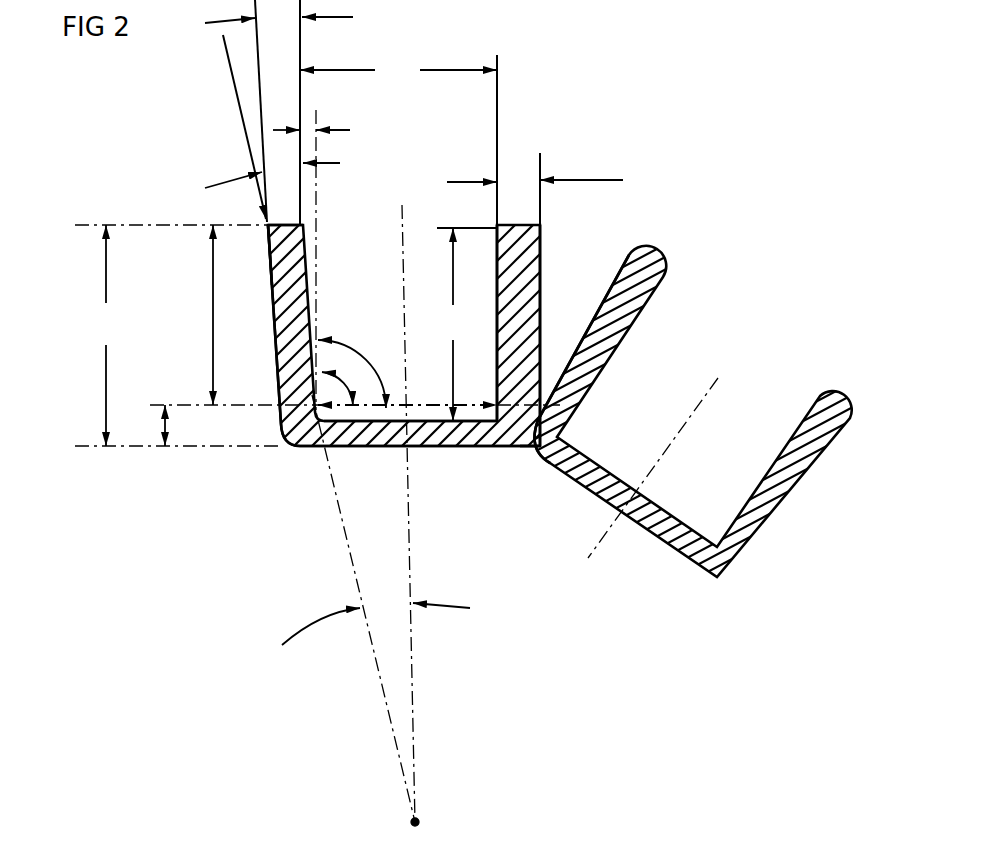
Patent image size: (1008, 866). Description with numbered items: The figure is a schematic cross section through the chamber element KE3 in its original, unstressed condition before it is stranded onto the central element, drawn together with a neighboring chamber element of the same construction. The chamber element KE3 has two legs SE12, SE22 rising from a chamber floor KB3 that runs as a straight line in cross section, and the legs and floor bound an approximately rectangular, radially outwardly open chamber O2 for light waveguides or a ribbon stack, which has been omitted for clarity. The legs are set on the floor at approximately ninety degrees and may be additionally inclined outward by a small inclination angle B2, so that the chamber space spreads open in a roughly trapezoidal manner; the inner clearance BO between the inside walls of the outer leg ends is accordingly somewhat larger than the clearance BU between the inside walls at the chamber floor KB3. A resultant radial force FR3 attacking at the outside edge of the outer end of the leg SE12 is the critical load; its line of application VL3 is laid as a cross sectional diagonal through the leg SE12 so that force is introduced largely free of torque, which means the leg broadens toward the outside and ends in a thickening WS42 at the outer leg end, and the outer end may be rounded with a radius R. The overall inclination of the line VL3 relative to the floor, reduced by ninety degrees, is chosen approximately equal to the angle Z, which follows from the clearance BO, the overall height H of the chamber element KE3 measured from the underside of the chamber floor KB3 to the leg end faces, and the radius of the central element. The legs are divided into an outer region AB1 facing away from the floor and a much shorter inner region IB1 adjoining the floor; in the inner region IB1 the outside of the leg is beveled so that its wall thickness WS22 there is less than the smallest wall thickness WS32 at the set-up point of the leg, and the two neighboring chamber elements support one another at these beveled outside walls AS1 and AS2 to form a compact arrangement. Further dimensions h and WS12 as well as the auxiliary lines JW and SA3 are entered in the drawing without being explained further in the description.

The chamber element KE3 is at (393, 154).
The leg SE12 is at (267, 367).
The leg SE22 is at (530, 243).
The line of application VL3 is at (272, 260).
The leg reference axis JW is at (310, 289).
The symmetry axis SA3 is at (410, 530).
The resultant radial force FR3 is at (237, 97).
The inclination angle B2 is at (311, 104).
The clearance BO is at (398, 70).
The radius R is at (262, 222).
The thickening WS42 is at (536, 165).
The chamber O2 is at (428, 227).
The inner height h is at (454, 324).
The overall height H is at (106, 335).
The outer region AB1 is at (213, 343).
The inner region IB1 is at (185, 425).
The clearance BU is at (422, 398).
The wall thickness WS32 is at (547, 345).
The wall thickness WS22 is at (276, 443).
The chamber floor KB3 is at (378, 449).
The bottom wall thickness WS12 is at (457, 449).
The beveled outside wall AS1 is at (512, 449).
The beveled outside wall AS2 is at (548, 466).
The angle Z is at (376, 608).